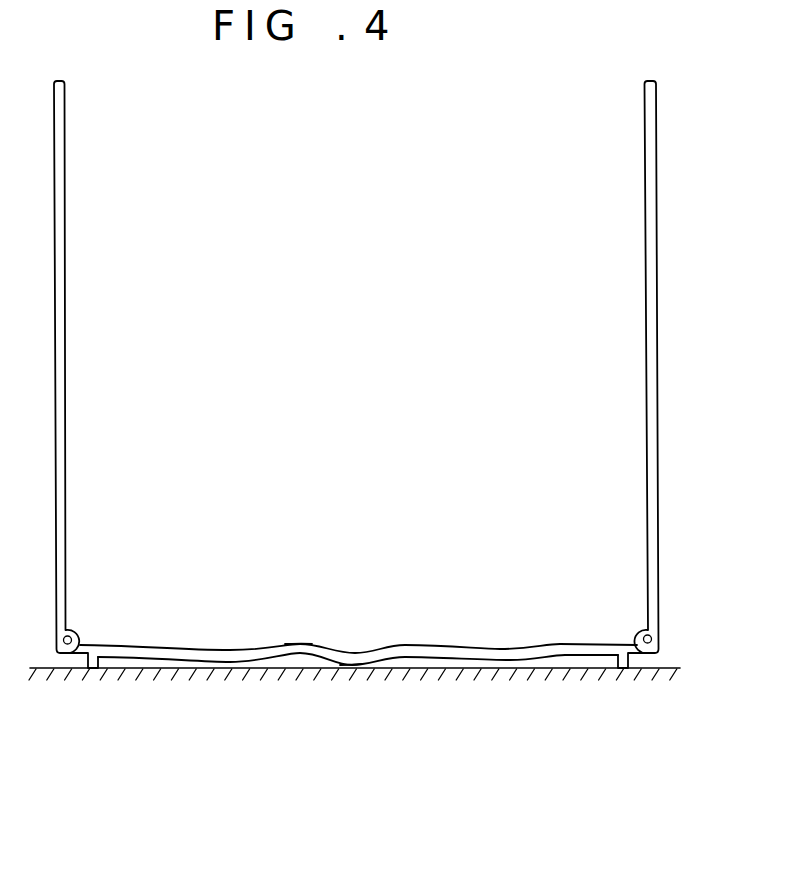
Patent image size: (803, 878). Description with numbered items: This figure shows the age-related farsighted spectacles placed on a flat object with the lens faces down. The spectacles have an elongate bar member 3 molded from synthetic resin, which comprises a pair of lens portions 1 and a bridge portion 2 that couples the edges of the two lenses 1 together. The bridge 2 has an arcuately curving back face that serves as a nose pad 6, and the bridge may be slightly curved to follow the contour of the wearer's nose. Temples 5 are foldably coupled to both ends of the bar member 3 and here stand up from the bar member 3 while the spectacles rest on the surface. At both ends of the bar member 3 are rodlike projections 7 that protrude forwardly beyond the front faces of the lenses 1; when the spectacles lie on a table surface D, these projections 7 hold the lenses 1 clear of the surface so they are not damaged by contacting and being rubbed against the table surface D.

The lens portion 1 is at (242, 656).
The bridge portion 2 is at (355, 658).
The bar member 3 is at (299, 634).
The temple 5 is at (65, 354).
The nose pad 6 is at (373, 652).
The rodlike projection 7 is at (104, 670).
The table surface D is at (667, 668).